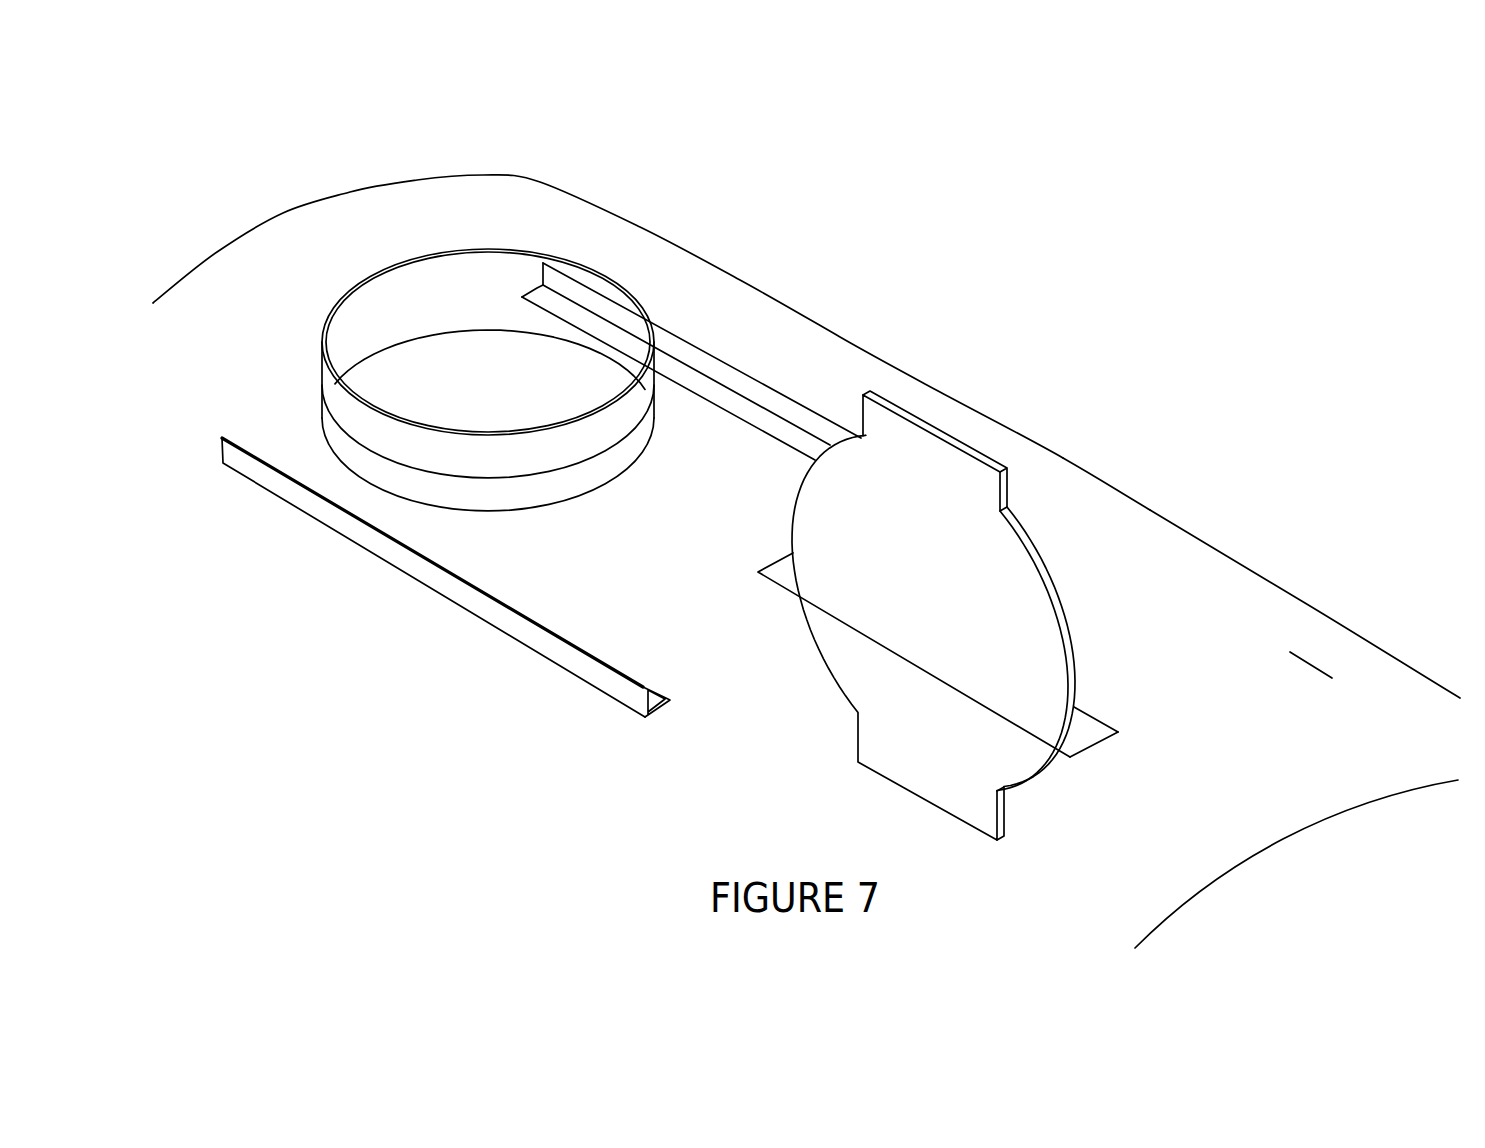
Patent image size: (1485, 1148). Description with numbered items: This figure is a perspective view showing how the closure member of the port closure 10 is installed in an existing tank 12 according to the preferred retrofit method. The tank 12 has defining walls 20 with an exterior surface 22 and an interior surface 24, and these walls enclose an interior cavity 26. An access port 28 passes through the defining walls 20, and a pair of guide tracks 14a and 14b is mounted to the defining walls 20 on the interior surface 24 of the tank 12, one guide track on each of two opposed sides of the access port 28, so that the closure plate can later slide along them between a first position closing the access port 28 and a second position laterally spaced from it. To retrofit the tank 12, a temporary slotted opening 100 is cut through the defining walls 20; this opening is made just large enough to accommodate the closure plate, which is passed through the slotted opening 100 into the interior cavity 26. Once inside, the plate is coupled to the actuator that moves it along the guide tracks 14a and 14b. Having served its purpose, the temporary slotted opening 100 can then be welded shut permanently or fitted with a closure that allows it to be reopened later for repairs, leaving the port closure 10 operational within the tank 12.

The port closure 10 is at (343, 177).
The defining walls 20 is at (527, 178).
The tank 12 is at (1203, 518).
The exterior surface 22 is at (1285, 615).
The interior surface 24 is at (1332, 678).
The interior cavity 26 is at (1093, 730).
The access port 28 is at (623, 288).
The guide track 14a is at (730, 382).
The guide track 14b is at (458, 592).
The temporary slotted opening 100 is at (1085, 752).